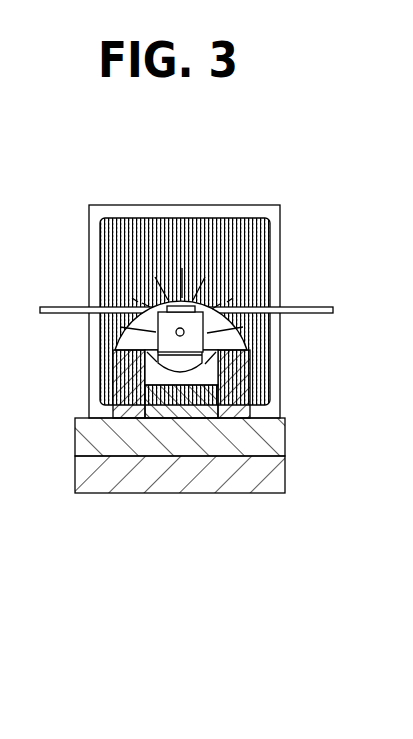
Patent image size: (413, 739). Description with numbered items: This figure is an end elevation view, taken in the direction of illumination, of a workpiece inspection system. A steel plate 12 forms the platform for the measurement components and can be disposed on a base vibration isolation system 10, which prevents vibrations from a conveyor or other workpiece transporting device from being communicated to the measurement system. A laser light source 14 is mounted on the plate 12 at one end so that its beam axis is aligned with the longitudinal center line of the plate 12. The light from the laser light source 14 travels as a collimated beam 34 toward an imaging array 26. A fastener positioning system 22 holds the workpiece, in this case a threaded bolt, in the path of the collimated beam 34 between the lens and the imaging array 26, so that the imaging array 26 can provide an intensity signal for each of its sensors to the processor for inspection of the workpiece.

The base vibration isolation system 10 is at (292, 476).
The steel plate 12 is at (291, 434).
The laser light source 14 is at (173, 321).
The fastener positioning system 22 is at (322, 303).
The imaging array 26 is at (137, 215).
The collimated beam 34 is at (205, 215).